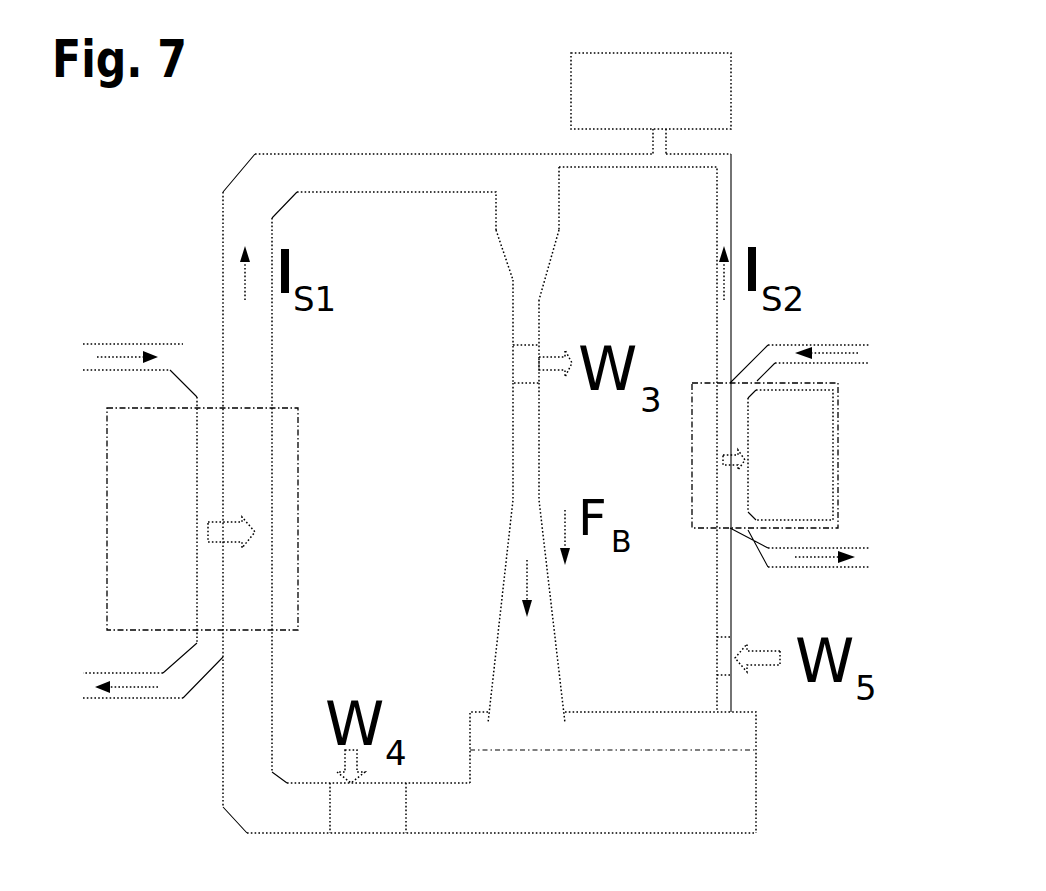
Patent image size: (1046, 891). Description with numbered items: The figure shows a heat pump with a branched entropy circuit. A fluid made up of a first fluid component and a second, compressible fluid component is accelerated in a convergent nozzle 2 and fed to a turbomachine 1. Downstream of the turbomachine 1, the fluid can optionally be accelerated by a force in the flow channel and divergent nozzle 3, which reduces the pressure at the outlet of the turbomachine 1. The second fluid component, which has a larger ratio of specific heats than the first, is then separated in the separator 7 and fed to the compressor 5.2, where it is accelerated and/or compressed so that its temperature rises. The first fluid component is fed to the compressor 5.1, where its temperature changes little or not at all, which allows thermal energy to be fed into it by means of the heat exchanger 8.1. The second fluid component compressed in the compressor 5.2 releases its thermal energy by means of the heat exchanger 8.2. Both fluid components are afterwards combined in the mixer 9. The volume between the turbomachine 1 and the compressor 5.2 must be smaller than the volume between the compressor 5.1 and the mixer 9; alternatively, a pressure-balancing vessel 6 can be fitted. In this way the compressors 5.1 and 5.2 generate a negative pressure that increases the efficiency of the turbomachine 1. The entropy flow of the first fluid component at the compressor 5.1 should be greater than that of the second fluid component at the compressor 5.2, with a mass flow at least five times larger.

The turbomachine 1 is at (507, 371).
The convergent nozzle 2 is at (508, 293).
The divergent nozzle 3 is at (507, 553).
The compressor 5.1 is at (369, 813).
The compressor 5.2 is at (680, 661).
The pressure-balancing vessel 6 is at (651, 103).
The separator 7 is at (613, 778).
The heat exchanger 8.1 is at (190, 521).
The heat exchanger 8.2 is at (742, 456).
The mixer 9 is at (527, 234).